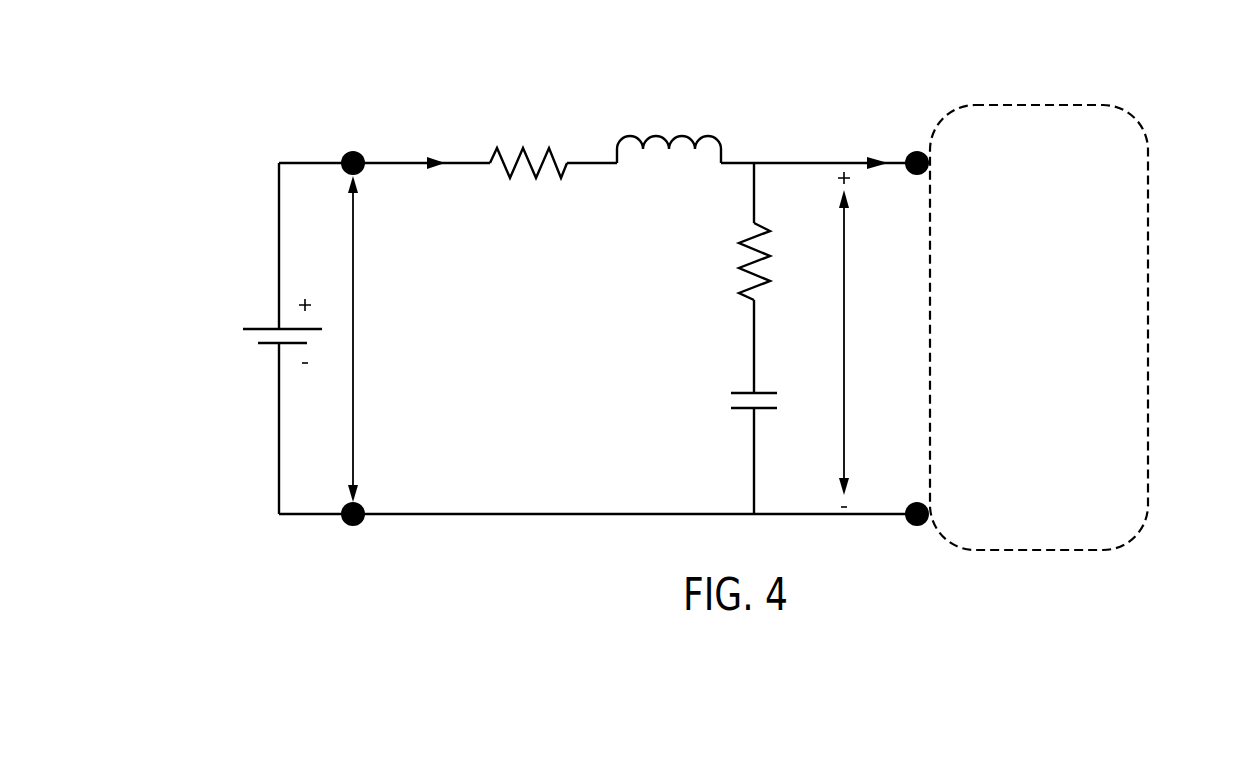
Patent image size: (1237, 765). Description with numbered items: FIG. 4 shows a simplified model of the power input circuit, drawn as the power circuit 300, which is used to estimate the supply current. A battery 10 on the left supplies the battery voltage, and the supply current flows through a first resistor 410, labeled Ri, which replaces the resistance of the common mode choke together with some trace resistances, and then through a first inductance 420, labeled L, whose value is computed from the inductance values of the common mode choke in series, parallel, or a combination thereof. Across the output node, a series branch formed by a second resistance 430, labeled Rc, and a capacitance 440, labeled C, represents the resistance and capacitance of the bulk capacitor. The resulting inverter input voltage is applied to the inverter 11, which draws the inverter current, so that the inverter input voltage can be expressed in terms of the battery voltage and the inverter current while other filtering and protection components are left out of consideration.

The power circuit 300 is at (428, 78).
The battery 10 is at (258, 339).
The inverter 11 is at (1150, 181).
The first resistor 410 is at (493, 150).
The first inductance 420 is at (616, 142).
The second resistance 430 is at (745, 242).
The capacitance 440 is at (735, 402).